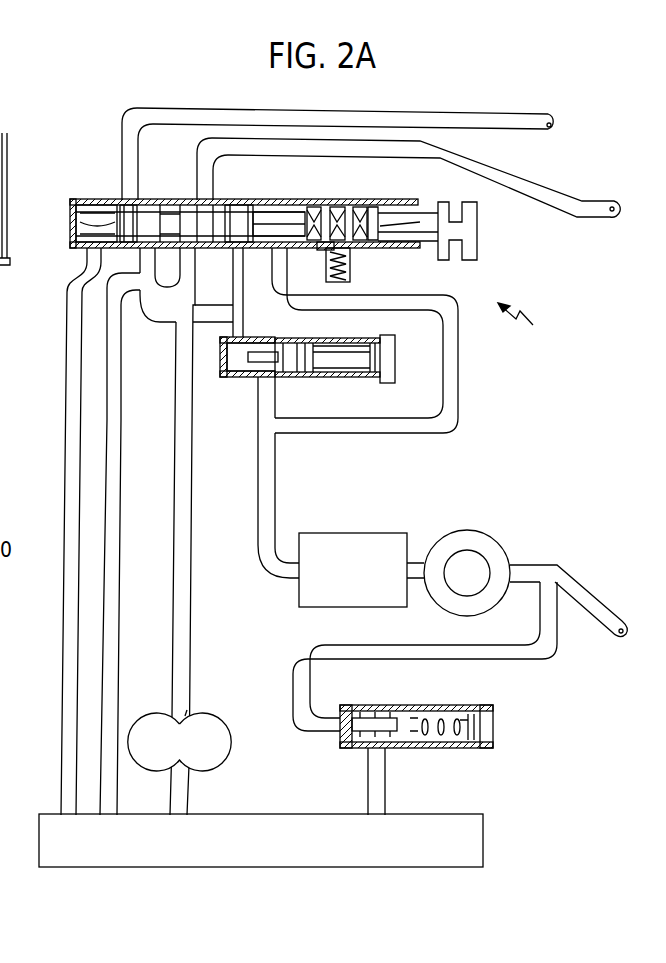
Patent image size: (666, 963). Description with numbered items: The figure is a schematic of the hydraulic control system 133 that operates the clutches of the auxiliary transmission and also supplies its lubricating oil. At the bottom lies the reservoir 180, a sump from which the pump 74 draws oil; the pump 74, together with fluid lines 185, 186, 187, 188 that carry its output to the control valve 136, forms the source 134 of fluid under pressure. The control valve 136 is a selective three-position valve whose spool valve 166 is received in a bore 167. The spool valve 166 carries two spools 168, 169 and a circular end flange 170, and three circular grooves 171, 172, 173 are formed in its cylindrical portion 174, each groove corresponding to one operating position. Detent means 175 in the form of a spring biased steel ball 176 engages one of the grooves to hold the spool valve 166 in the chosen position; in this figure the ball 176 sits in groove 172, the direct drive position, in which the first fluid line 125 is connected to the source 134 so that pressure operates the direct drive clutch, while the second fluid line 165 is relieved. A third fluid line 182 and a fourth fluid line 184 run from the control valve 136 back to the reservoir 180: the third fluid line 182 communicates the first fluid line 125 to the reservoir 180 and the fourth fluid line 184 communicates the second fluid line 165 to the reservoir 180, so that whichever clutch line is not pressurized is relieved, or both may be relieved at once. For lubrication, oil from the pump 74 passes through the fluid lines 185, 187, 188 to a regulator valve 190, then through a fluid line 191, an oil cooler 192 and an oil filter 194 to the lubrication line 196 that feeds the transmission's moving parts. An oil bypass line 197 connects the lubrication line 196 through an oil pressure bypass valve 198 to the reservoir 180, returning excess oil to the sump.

The first fluid line 125 is at (520, 112).
The second fluid line 165 is at (543, 190).
The bore 167 is at (77, 200).
The circular end flange 170 is at (73, 228).
The spool 168 is at (169, 210).
The spool 169 is at (239, 207).
The spool valve 166 is at (280, 214).
The circular groove 173 is at (313, 207).
The circular groove 172 is at (341, 207).
The circular groove 171 is at (362, 206).
The cylindrical portion 174 is at (418, 244).
The control valve 136 is at (480, 238).
The steel ball 176 is at (322, 250).
The detent means 175 is at (352, 262).
The third fluid line 182 is at (60, 712).
The fluid line 186 is at (132, 272).
The fourth fluid line 184 is at (117, 683).
The fluid line 185 is at (190, 527).
The fluid line 187 is at (213, 323).
The fluid line 188 is at (243, 297).
The regulator valve 190 is at (328, 369).
The fluid line 191 is at (276, 480).
The oil cooler 192 is at (378, 543).
The oil filter 194 is at (478, 538).
The lubrication line 196 is at (585, 585).
The oil bypass line 197 is at (390, 652).
The oil pressure bypass valve 198 is at (437, 706).
The pump 74 is at (222, 752).
The source of fluid under pressure 134 is at (200, 702).
The reservoir 180 is at (286, 853).
The hydraulic control system 133 is at (533, 322).